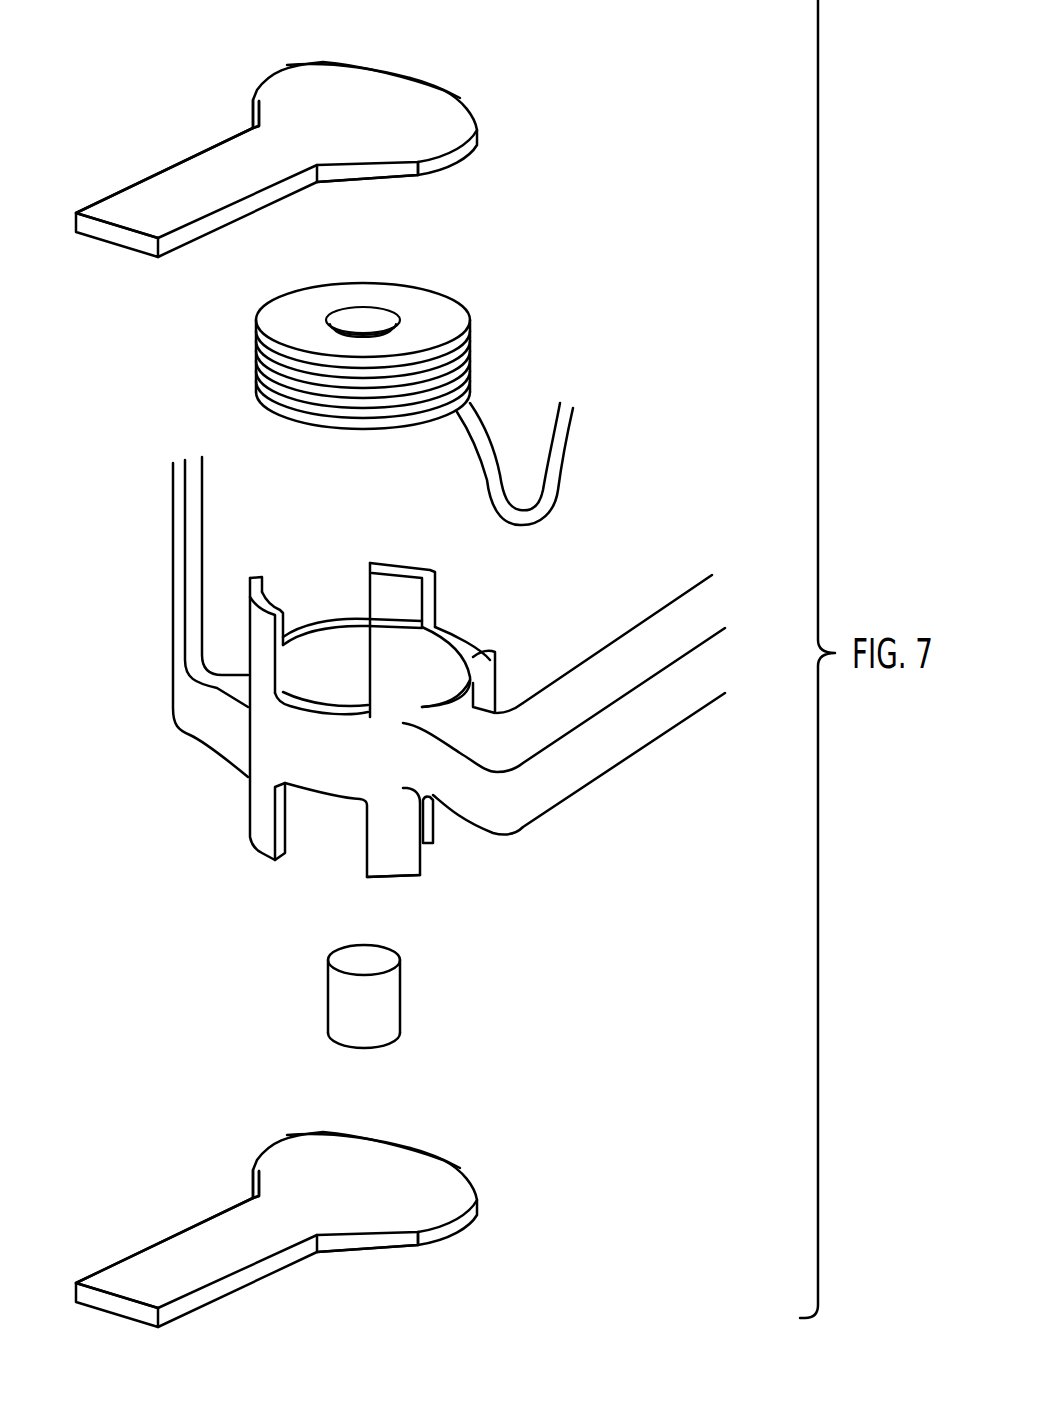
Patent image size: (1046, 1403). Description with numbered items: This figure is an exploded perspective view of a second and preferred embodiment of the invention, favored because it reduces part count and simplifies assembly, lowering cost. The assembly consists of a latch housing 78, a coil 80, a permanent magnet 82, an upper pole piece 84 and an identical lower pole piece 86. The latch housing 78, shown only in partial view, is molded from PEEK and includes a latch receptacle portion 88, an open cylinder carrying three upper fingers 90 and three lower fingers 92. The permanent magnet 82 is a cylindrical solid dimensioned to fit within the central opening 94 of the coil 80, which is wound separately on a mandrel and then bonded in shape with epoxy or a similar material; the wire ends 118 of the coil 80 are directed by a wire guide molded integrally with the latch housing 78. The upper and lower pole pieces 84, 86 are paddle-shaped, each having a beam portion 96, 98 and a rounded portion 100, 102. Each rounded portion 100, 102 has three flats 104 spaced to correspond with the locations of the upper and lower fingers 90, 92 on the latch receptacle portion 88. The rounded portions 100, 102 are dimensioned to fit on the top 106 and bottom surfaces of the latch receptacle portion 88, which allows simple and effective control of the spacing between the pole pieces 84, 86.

The latch housing 78 is at (593, 767).
The coil 80 is at (453, 317).
The permanent magnet 82 is at (387, 1002).
The upper pole piece 84 is at (477, 120).
The lower pole piece 86 is at (477, 1190).
The latch receptacle portion 88 is at (280, 742).
The upper fingers 90 is at (258, 633).
The lower fingers 92 is at (267, 840).
The central opening 94 is at (382, 322).
The beam portion 96 is at (170, 188).
The beam portion 98 is at (170, 1258).
The rounded portion 100 is at (337, 83).
The rounded portion 102 is at (337, 1153).
The flats 104 is at (410, 78).
The top surface 106 is at (480, 650).
The wire ends 118 is at (573, 413).